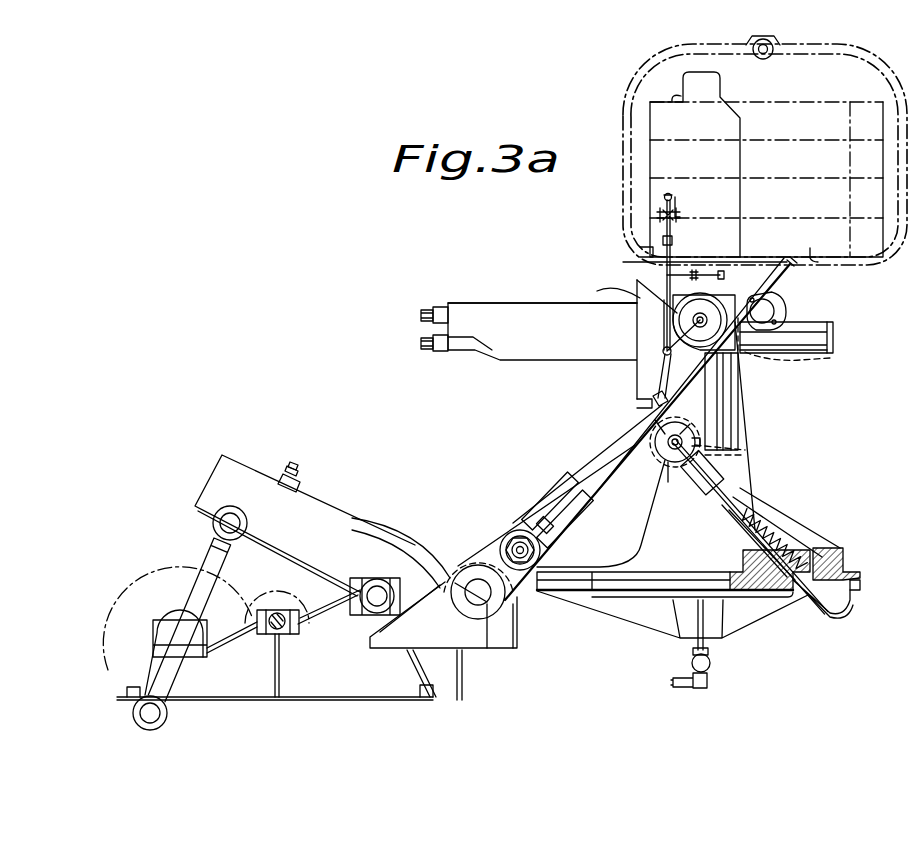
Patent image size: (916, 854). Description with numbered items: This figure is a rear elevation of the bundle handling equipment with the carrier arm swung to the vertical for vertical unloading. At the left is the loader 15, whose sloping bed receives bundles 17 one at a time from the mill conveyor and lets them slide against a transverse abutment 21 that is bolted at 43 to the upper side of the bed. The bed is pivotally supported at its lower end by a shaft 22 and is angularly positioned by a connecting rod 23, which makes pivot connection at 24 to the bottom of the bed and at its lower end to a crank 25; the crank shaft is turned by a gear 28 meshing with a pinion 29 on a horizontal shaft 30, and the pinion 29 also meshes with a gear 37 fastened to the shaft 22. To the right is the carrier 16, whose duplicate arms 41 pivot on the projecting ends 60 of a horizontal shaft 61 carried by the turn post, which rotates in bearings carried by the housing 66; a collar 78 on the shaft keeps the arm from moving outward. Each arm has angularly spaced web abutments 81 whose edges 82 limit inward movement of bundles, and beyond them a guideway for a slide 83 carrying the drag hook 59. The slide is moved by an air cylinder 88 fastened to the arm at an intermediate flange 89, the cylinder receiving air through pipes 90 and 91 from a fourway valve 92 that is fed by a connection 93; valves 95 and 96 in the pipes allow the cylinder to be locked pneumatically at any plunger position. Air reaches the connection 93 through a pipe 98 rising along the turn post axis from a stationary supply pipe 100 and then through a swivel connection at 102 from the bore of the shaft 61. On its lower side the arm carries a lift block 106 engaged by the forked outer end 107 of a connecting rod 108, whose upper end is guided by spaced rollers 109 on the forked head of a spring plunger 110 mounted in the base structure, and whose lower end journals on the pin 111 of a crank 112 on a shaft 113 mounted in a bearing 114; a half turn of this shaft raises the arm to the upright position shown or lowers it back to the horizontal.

The loader 15 is at (235, 468).
The carrier 16 is at (741, 160).
The bundles 17 is at (795, 112).
The transverse abutment 21 is at (282, 470).
The shaft 22 is at (377, 584).
The connecting rod 23 is at (226, 560).
The pivot connection 24 is at (234, 520).
The crank 25 is at (185, 681).
The gear 28 is at (159, 575).
The pinion 29 is at (272, 592).
The horizontal shaft 30 is at (292, 626).
The gear 37 is at (423, 541).
The arms 41 is at (490, 300).
The bolted connection 43 is at (302, 466).
The drag hook 59 is at (440, 307).
The projecting ends 60 is at (676, 348).
The horizontal shaft 61 is at (706, 312).
The housing 66 is at (646, 444).
The collar 78 is at (730, 306).
The web abutments 81 is at (645, 284).
The cooperating edges 82 is at (698, 270).
The slide 83 is at (421, 313).
The air cylinder 88 is at (820, 348).
The intermediate flange 89 is at (787, 363).
The pipe 90 is at (674, 196).
The pipe 91 is at (615, 294).
The fourway valve 92 is at (655, 212).
The connection 93 is at (660, 330).
The valve 95 is at (745, 452).
The valve 96 is at (680, 238).
The pipe 98 is at (738, 409).
The stationary supply pipe 100 is at (690, 683).
The swivel connection 102 is at (665, 322).
The lift block 106 is at (782, 301).
The forked outer end 107 is at (795, 324).
The connecting rod 108 is at (600, 459).
The spaced rollers 109 is at (673, 483).
The spring plunger 110 is at (720, 470).
The pin 111 is at (528, 518).
The crank 112 is at (488, 551).
The shaft 113 is at (486, 598).
The bearing 114 is at (505, 650).